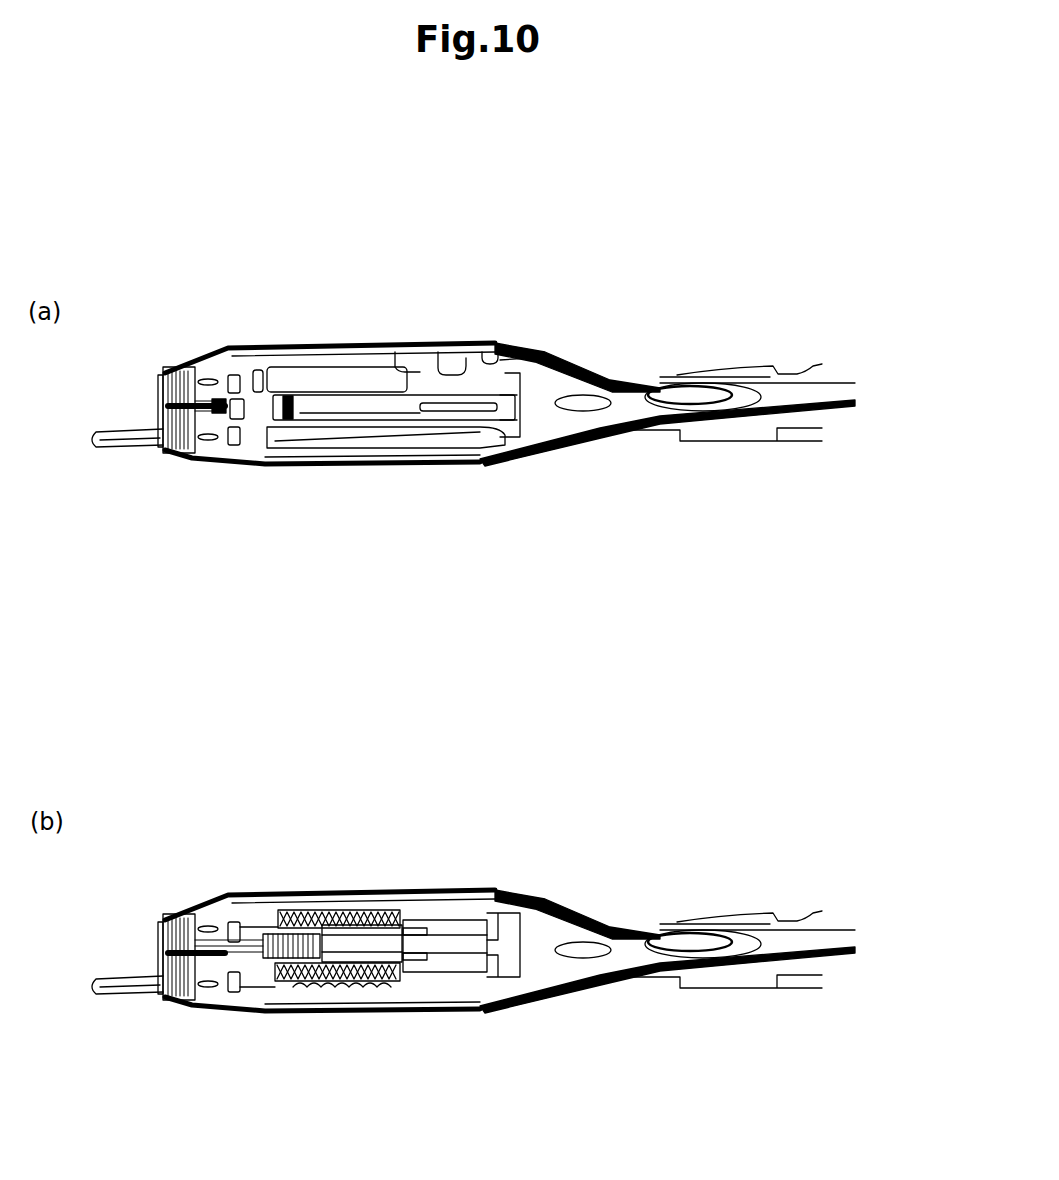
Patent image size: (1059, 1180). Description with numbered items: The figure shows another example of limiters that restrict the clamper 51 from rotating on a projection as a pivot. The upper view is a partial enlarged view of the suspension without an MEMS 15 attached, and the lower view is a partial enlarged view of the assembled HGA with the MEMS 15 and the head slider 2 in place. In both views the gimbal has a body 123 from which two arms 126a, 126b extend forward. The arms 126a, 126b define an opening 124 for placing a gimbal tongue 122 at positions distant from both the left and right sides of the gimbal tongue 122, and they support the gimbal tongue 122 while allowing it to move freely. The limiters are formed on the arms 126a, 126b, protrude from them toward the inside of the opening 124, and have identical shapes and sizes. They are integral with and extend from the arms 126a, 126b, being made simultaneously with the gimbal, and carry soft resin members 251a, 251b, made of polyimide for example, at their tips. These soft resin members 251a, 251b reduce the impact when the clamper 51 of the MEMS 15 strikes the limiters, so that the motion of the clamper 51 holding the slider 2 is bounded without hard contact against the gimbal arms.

The gimbal tongue 122 is at (340, 395).
The body 123 is at (497, 465).
The opening 124 is at (309, 388).
The arm 126a is at (395, 352).
The arm 126b is at (320, 467).
The soft resin member 251a is at (452, 362).
The soft resin member 251b is at (540, 352).
The slider 2 is at (368, 926).
The MEMS 15 is at (220, 893).
The clamper 51 is at (442, 918).